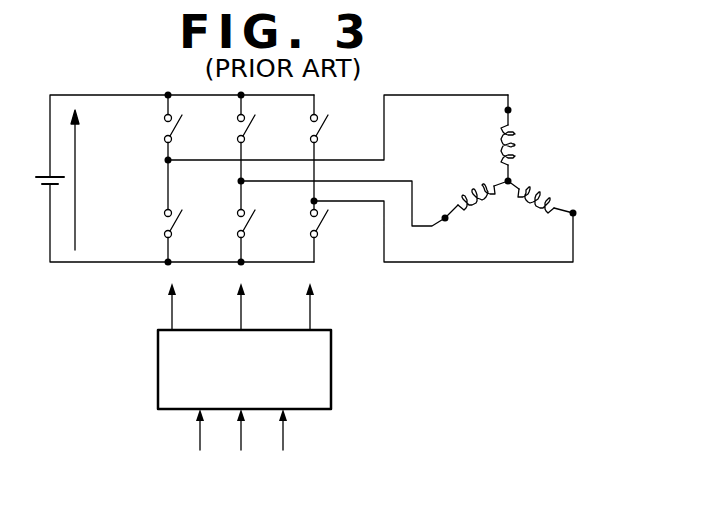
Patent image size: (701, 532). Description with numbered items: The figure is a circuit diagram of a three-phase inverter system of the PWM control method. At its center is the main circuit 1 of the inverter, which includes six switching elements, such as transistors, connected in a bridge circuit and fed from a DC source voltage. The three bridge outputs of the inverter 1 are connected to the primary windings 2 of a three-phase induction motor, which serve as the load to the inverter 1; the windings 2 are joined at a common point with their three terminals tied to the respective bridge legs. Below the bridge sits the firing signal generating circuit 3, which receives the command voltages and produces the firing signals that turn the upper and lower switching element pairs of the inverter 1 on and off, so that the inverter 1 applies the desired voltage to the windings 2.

The main circuit 1 is at (102, 264).
The primary windings 2 is at (509, 186).
The firing signal generating circuit 3 is at (331, 369).